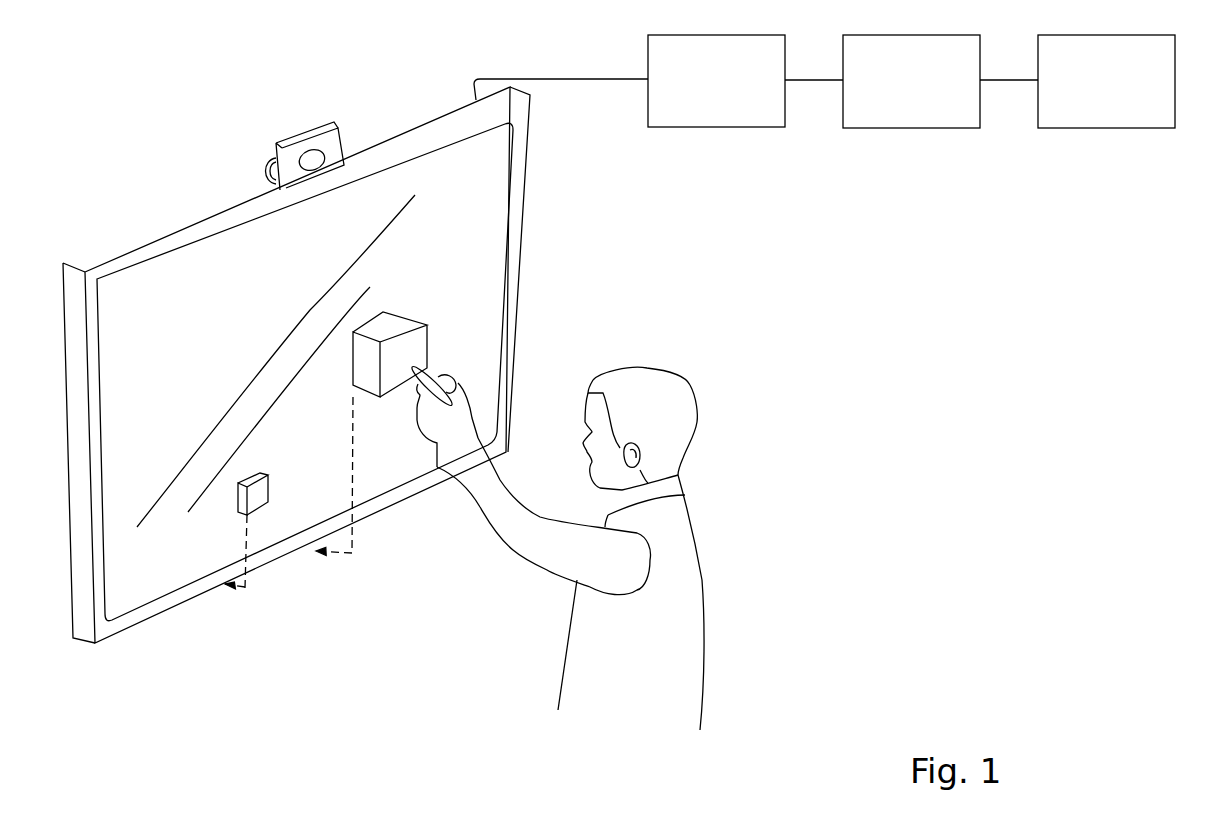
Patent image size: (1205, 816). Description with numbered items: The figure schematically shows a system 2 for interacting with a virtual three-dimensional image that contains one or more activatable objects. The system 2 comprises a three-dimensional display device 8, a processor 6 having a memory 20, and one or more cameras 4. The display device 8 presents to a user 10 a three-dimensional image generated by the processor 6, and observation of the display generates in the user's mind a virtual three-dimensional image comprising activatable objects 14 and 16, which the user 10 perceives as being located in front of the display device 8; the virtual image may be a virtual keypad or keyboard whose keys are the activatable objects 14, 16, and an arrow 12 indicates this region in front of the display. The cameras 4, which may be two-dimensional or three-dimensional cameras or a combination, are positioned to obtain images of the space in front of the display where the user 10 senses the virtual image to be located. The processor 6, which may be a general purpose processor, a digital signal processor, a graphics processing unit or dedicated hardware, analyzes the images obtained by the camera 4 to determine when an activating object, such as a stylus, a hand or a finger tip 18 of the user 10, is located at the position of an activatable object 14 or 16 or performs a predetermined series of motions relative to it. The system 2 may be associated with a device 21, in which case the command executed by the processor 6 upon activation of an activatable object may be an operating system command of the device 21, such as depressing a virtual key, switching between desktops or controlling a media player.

The system 2 is at (752, 348).
The camera 4 is at (297, 152).
The processor 6 is at (702, 107).
The 3D display device 8 is at (527, 166).
The user 10 is at (685, 612).
The display surface 12 is at (533, 300).
The activatable object 14 is at (393, 323).
The activatable object 16 is at (238, 490).
The finger tip 18 is at (414, 368).
The memory 20 is at (927, 107).
The device 21 is at (1136, 107).